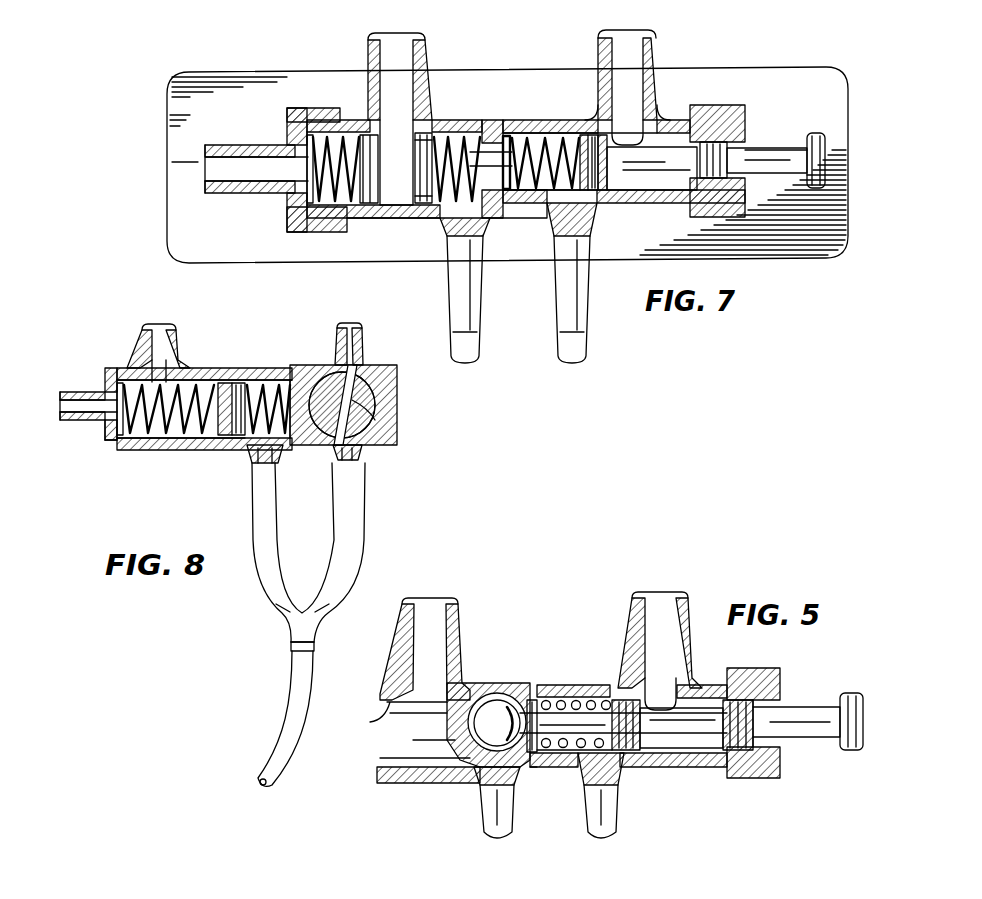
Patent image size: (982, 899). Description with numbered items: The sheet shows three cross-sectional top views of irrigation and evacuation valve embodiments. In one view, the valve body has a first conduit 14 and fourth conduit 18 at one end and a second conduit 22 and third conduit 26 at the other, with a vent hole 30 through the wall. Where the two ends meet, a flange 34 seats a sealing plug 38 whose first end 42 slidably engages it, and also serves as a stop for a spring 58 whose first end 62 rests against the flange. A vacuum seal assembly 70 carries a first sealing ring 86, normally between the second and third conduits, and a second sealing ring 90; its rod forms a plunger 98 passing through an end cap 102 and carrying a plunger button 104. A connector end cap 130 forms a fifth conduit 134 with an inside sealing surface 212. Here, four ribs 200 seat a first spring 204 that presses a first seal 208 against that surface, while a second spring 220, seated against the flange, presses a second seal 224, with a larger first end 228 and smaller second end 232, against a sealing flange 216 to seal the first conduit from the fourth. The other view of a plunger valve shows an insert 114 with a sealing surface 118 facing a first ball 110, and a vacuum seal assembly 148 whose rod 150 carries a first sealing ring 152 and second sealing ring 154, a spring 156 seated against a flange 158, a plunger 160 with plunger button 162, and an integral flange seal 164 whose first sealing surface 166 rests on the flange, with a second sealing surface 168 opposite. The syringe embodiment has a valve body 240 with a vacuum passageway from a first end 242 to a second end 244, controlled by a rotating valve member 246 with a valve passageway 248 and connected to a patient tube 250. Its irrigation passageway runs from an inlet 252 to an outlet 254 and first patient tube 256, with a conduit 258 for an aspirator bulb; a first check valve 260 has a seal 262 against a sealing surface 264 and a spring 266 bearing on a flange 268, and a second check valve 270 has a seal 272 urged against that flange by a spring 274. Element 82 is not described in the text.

In FIG. 7, the first conduit 14 is at (375, 52).
In FIG. 7, the fourth conduit 18 is at (448, 238).
In FIG. 5, the fourth conduit 18 is at (478, 792).
In FIG. 7, the second conduit 22 is at (636, 35).
In FIG. 5, the second conduit 22 is at (667, 605).
In FIG. 7, the third conduit 26 is at (592, 285).
In FIG. 5, the third conduit 26 is at (604, 840).
In FIG. 7, the vent hole 30 is at (675, 118).
In FIG. 7, the flange 34 is at (501, 222).
In FIG. 7, the sealing plug 38 is at (512, 206).
In FIG. 7, the first end of sealing plug 42 is at (537, 133).
In FIG. 7, the spring 58 is at (534, 208).
In FIG. 7, the first end of spring 62 is at (578, 140).
In FIG. 7, the vacuum seal assembly 70 is at (626, 192).
In FIG. 7, the seal 82 is at (700, 178).
In FIG. 7, the first sealing ring 86 is at (597, 205).
In FIG. 7, the second sealing ring 90 is at (760, 148).
In FIG. 7, the plunger 98 is at (770, 150).
In FIG. 7, the plunger button 104 is at (816, 133).
In FIG. 7, the connector end cap 130 is at (228, 193).
In FIG. 7, the fifth conduit 134 is at (228, 157).
In FIG. 7, the ribs 200 is at (390, 132).
In FIG. 7, the first spring 204 is at (345, 220).
In FIG. 7, the first seal 208 is at (292, 225).
In FIG. 7, the inside sealing surface 212 is at (290, 130).
In FIG. 7, the sealing flange 216 is at (428, 120).
In FIG. 7, the second spring 220 is at (486, 133).
In FIG. 7, the second seal 224 is at (430, 222).
In FIG. 7, the first end of second seal 228 is at (432, 133).
In FIG. 7, the second end of second seal 232 is at (435, 150).
In FIG. 8, the valve body 240 is at (275, 368).
In FIG. 8, the first end of vacuum passageway 242 is at (360, 330).
In FIG. 8, the second end of vacuum passageway 244 is at (364, 455).
In FIG. 8, the rotating valve member 246 is at (397, 395).
In FIG. 8, the valve passageway 248 is at (380, 422).
In FIG. 8, the patient tube 250 is at (350, 550).
In FIG. 8, the inlet 252 is at (87, 420).
In FIG. 8, the outlet 254 is at (251, 470).
In FIG. 8, the first patient tube 256 is at (258, 615).
In FIG. 8, the conduit 258 is at (158, 330).
In FIG. 8, the first check valve 260 is at (97, 392).
In FIG. 8, the seal 262 is at (127, 450).
In FIG. 8, the sealing surface 264 is at (112, 448).
In FIG. 8, the spring 266 is at (176, 450).
In FIG. 8, the flange 268 is at (222, 383).
In FIG. 8, the second check valve 270 is at (238, 383).
In FIG. 8, the seal 272 is at (226, 380).
In FIG. 8, the spring 274 is at (292, 366).
In FIG. 5, the end cap 102 is at (780, 778).
In FIG. 5, the first ball 110 is at (515, 712).
In FIG. 5, the insert 114 is at (392, 715).
In FIG. 5, the sealing surface of insert 118 is at (475, 700).
In FIG. 5, the vacuum seal assembly 148 is at (673, 760).
In FIG. 5, the rod 150 is at (706, 745).
In FIG. 5, the first sealing ring 152 is at (647, 768).
In FIG. 5, the second sealing ring 154 is at (722, 705).
In FIG. 5, the spring 156 is at (593, 700).
In FIG. 5, the flange 158 is at (537, 755).
In FIG. 5, the plunger 160 is at (786, 705).
In FIG. 5, the plunger button 162 is at (853, 693).
In FIG. 5, the flange seal 164 is at (520, 775).
In FIG. 5, the first sealing surface of flange seal 166 is at (532, 720).
In FIG. 5, the second sealing surface of flange seal 168 is at (530, 700).